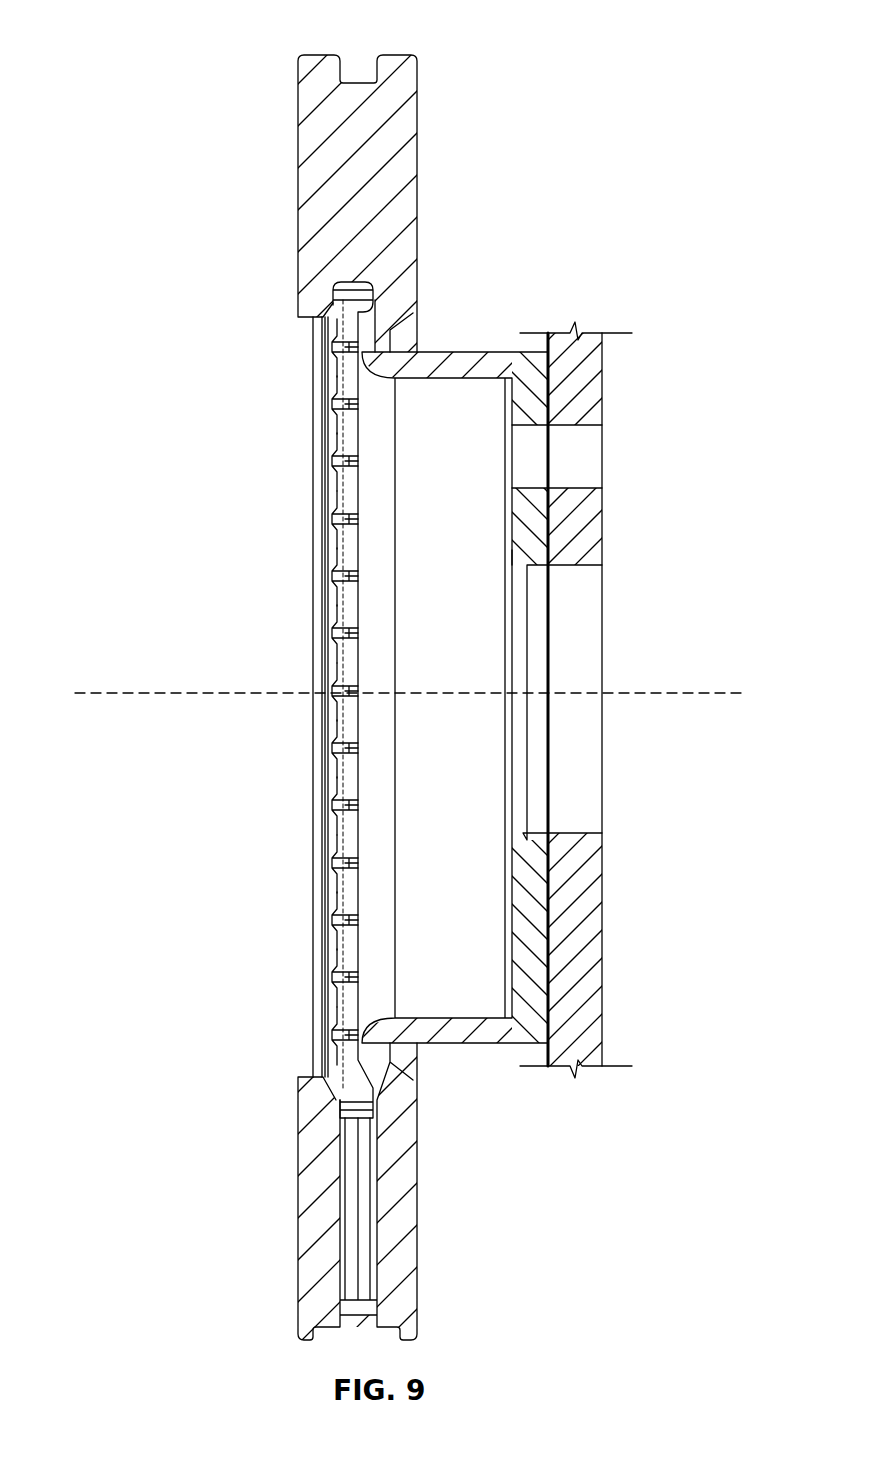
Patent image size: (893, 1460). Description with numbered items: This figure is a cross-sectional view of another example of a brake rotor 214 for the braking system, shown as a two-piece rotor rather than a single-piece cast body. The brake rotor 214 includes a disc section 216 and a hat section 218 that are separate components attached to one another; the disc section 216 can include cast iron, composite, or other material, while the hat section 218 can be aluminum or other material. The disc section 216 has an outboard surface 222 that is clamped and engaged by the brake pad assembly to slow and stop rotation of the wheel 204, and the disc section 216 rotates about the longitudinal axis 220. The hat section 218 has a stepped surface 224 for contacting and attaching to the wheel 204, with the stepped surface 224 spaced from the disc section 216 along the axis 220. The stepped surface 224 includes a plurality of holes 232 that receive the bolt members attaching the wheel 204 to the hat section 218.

The brake rotor 214 is at (145, 157).
The disc section 216 is at (298, 127).
The outboard surface 222 is at (417, 130).
The hat section 218 is at (455, 352).
The stepped surface 224 is at (548, 375).
The wheel 204 is at (602, 418).
The holes 232 is at (530, 488).
The axis 220 is at (147, 692).